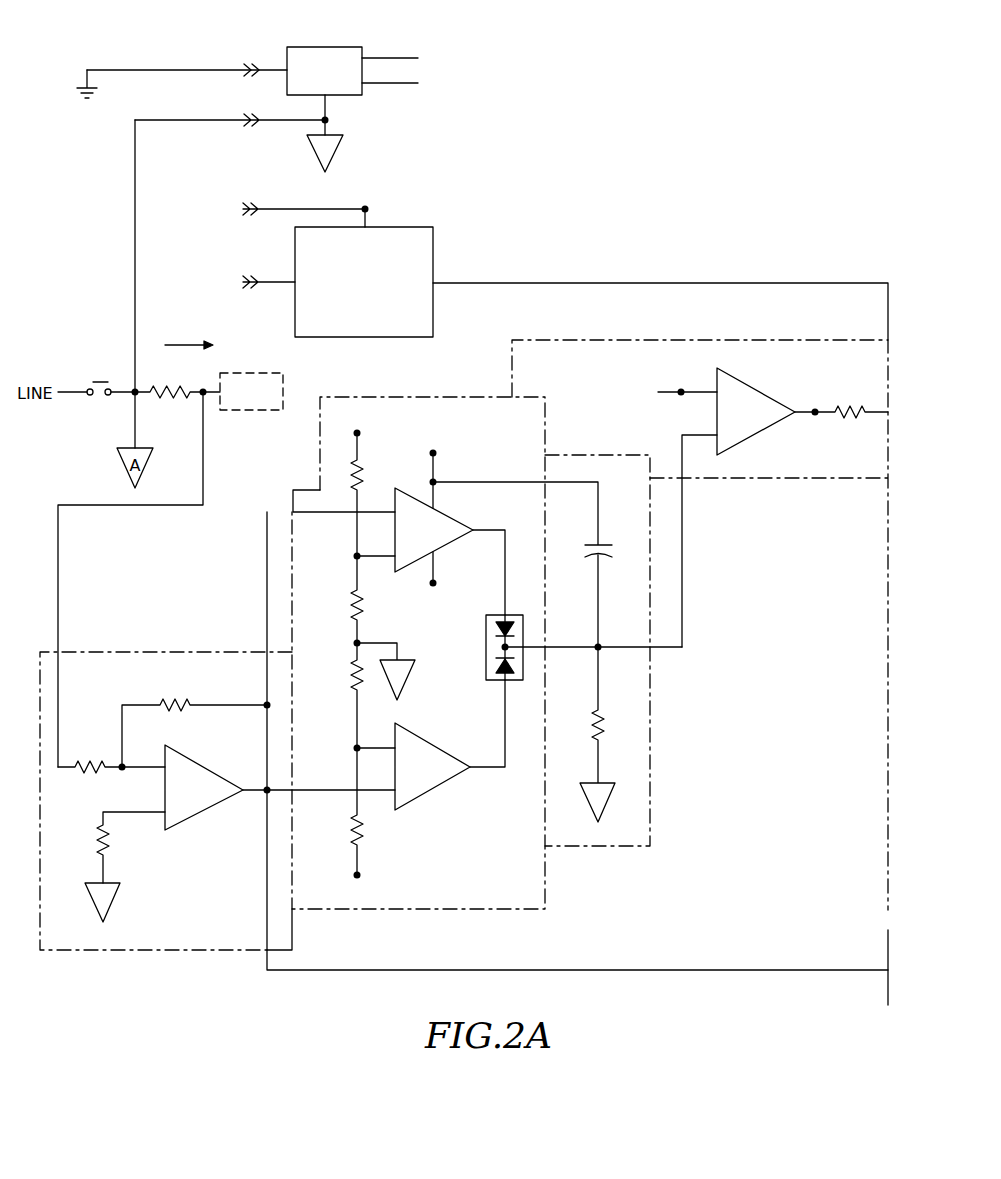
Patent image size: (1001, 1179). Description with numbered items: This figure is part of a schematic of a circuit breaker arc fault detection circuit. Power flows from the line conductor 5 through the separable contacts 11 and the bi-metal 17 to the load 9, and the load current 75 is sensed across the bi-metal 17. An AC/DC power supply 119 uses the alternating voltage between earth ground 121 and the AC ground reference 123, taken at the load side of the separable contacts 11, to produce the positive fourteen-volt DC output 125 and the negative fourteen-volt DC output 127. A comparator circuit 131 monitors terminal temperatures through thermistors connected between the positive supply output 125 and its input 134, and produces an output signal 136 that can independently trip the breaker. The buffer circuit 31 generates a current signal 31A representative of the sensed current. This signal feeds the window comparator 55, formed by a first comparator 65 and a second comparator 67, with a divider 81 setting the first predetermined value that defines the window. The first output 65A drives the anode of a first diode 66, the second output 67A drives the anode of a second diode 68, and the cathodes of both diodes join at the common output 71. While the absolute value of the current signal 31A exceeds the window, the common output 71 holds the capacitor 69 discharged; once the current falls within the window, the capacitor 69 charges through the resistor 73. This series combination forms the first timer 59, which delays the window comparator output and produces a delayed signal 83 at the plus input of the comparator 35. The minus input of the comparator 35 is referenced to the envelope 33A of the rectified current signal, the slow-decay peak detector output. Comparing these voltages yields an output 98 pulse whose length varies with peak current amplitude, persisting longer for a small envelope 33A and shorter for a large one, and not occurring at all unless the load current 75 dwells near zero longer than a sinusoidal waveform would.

The earth ground 121 is at (86, 71).
The AC/DC power supply 119 is at (305, 46).
The +14 VA DC output 125 is at (383, 57).
The −14 VA DC output 127 is at (383, 85).
The AC ground reference 123 is at (330, 120).
The input of the terminal temperature circuit 134 is at (277, 280).
The comparator circuit 131 is at (433, 244).
The output signal 136 is at (825, 283).
The load current 75 is at (187, 344).
The separable contacts 11 is at (98, 380).
The line conductor 5 is at (75, 393).
The load 9 is at (258, 373).
The bi-metal 17 is at (163, 398).
The divider 81 is at (338, 461).
The first comparator 65 is at (446, 542).
The first output 65A is at (474, 531).
The first diode 66 is at (516, 627).
The common output 71 is at (500, 647).
The second diode 68 is at (492, 668).
The capacitor 69 is at (604, 544).
The delayed signal 83 is at (683, 588).
The envelope of the rectified current signal 33A is at (680, 390).
The comparator 35 is at (808, 338).
The output of comparator 35 98 is at (813, 415).
The resistor 73 is at (592, 712).
The first timer 59 is at (613, 848).
The buffer circuit 31 is at (175, 951).
The current signal 31A is at (316, 788).
The second comparator 67 is at (440, 745).
The second output 67A is at (471, 770).
The window comparator 55 is at (480, 910).